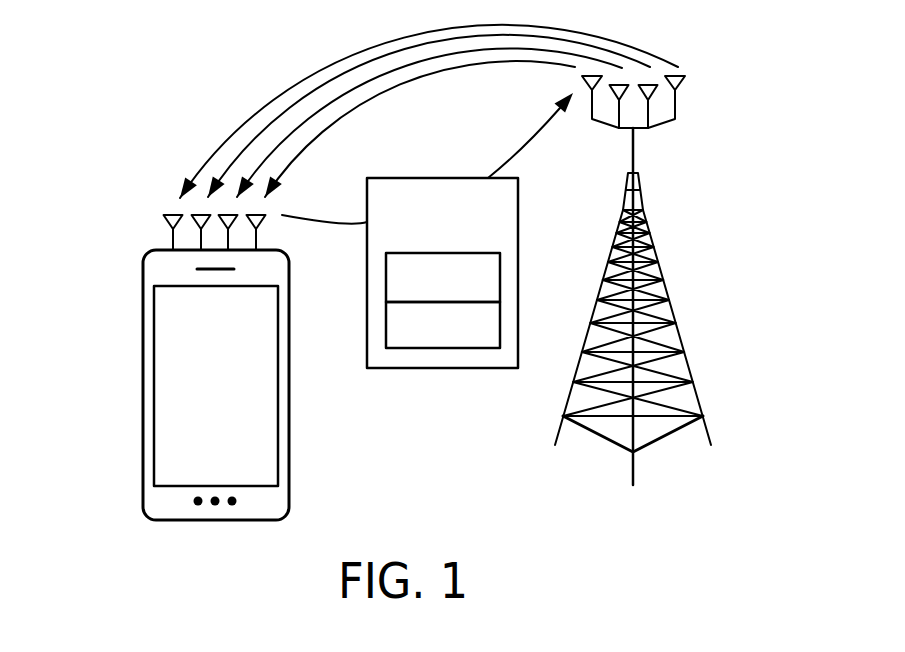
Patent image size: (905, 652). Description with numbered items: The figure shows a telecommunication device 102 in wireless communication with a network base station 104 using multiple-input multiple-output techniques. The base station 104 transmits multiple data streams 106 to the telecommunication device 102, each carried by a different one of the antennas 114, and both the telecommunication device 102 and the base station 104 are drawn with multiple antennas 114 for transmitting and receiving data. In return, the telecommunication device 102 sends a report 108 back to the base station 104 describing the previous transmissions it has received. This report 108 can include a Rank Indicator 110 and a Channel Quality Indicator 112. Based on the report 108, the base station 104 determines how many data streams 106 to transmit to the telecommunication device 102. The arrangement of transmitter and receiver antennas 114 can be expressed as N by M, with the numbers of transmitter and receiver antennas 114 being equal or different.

The telecommunication device 102 is at (147, 388).
The network base station 104 is at (640, 283).
The data streams 106 is at (293, 74).
The report 108 is at (463, 242).
The Rank Indicator (RI) 110 is at (480, 290).
The Channel Quality Indicator (CQI) 112 is at (488, 336).
The antennas 114 is at (167, 213).